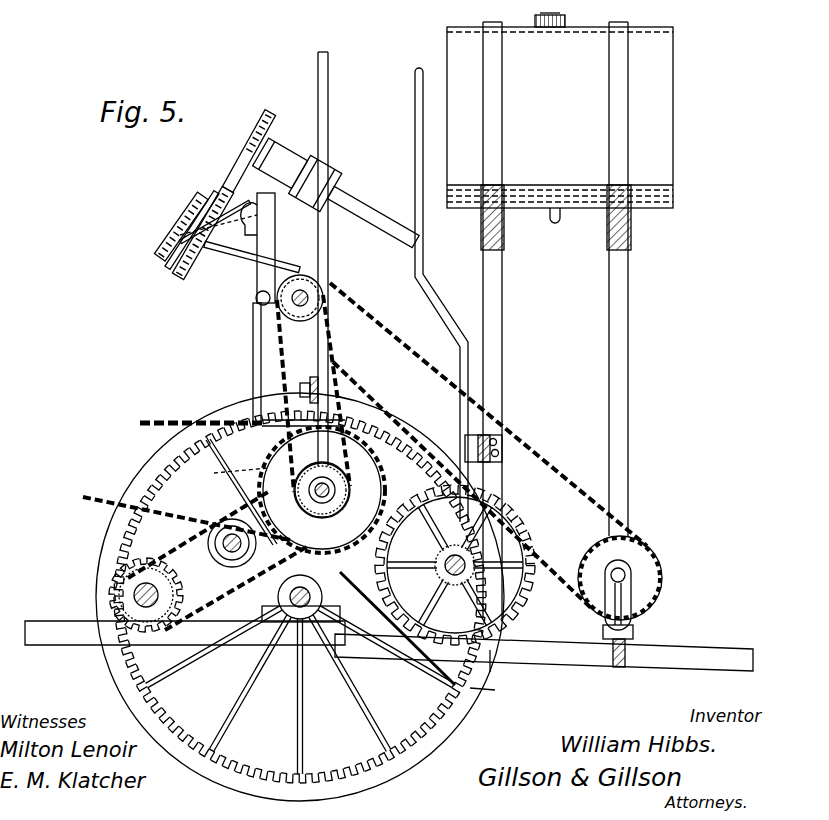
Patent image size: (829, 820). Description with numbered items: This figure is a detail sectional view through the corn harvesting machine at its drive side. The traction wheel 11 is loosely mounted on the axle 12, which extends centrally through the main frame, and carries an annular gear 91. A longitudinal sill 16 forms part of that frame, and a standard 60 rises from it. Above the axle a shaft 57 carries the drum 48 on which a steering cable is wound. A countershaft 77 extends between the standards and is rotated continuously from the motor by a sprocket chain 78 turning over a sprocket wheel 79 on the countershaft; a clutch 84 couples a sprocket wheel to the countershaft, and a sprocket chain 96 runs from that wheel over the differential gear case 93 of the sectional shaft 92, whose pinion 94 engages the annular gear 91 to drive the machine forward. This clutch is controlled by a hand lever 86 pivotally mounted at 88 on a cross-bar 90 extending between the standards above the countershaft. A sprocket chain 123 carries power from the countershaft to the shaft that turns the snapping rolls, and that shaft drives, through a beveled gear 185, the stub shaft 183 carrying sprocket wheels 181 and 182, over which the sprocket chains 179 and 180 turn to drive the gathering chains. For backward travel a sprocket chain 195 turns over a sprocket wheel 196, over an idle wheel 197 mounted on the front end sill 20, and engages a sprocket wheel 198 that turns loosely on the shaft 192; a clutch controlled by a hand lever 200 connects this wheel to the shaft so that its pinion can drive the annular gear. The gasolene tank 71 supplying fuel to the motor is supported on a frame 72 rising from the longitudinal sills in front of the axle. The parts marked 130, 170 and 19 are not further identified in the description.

The gasolene tank 71 is at (560, 118).
The frame 72 is at (607, 248).
The hand lever 200 is at (468, 348).
The hand lever 86 is at (327, 284).
The drum 130 is at (235, 185).
The sprocket chain 179 is at (205, 196).
The sprocket chain 180 is at (248, 151).
The sprocket wheel 181 is at (158, 253).
The stub shaft 183 is at (170, 236).
The sprocket wheel 182 is at (198, 268).
The beveled gear 185 is at (256, 300).
The sprocket wheel 170 is at (292, 302).
The sprocket wheel 196 is at (262, 330).
The standard 60 is at (248, 308).
The cross-bar 90 is at (304, 381).
The sprocket chain 123 is at (340, 362).
The sprocket chain 195 is at (522, 522).
The pivot 88 is at (352, 385).
The clutch 84 is at (322, 490).
The sprocket chain 78 is at (140, 426).
The countershaft 77 is at (241, 492).
The sprocket wheel 79 is at (229, 467).
The drum 48 is at (186, 513).
The shaft 57 is at (226, 551).
The sectional shaft 92 is at (138, 597).
The differential gear case 93 is at (118, 590).
The pinion 94 is at (104, 566).
The sprocket chain 96 is at (219, 561).
The sprocket wheel 198 is at (397, 628).
The shaft 192 is at (505, 590).
The idle wheel 197 is at (663, 575).
The longitudinal sill 16 is at (544, 662).
The front end sill 20 is at (622, 685).
The bracket 19 is at (506, 667).
The traction wheel 11 is at (270, 661).
The axle 12 is at (300, 610).
The annular gear 91 is at (300, 597).